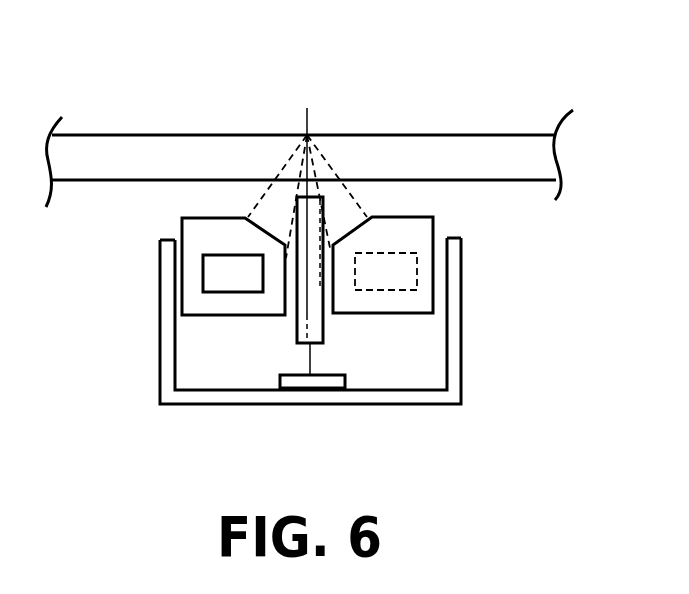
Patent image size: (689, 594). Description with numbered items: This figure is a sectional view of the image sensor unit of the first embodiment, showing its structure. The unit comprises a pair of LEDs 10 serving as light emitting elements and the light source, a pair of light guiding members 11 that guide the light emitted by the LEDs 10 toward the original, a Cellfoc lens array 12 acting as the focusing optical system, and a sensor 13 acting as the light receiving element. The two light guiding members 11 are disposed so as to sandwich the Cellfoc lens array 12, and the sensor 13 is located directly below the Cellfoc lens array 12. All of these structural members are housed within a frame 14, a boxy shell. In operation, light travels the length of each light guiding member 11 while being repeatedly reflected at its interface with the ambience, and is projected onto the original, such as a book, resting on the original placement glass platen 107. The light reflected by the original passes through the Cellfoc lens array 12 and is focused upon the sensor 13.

The original placement glass platen 107 is at (483, 132).
The light guiding member 11 is at (190, 228).
The LED 10 is at (203, 272).
The Cellfoc lens array 12 is at (303, 326).
The sensor 13 is at (337, 386).
The frame 14 is at (461, 356).